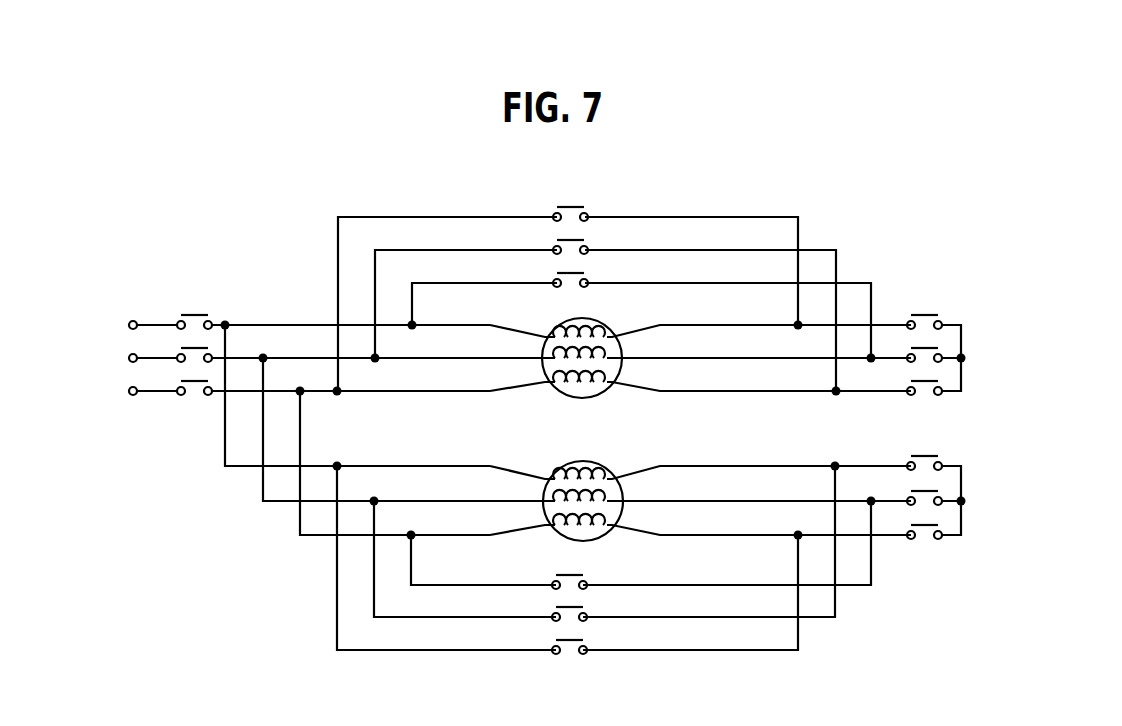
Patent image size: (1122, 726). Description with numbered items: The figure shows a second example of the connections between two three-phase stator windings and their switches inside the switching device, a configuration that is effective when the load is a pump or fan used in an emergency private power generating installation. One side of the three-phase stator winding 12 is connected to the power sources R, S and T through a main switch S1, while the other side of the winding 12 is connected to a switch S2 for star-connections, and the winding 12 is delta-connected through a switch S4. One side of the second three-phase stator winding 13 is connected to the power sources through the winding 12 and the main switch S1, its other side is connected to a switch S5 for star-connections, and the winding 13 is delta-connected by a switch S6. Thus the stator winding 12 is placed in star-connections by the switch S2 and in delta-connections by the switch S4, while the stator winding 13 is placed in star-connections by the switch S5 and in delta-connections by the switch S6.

The 3-phase stator winding 12 is at (605, 395).
The 3-phase stator winding 13 is at (562, 458).
The main switch S1 is at (176, 336).
The switch for star-connections S2 is at (934, 340).
The switch S4 is at (604, 282).
The switch for star-connections S5 is at (934, 481).
The switch S6 is at (604, 577).